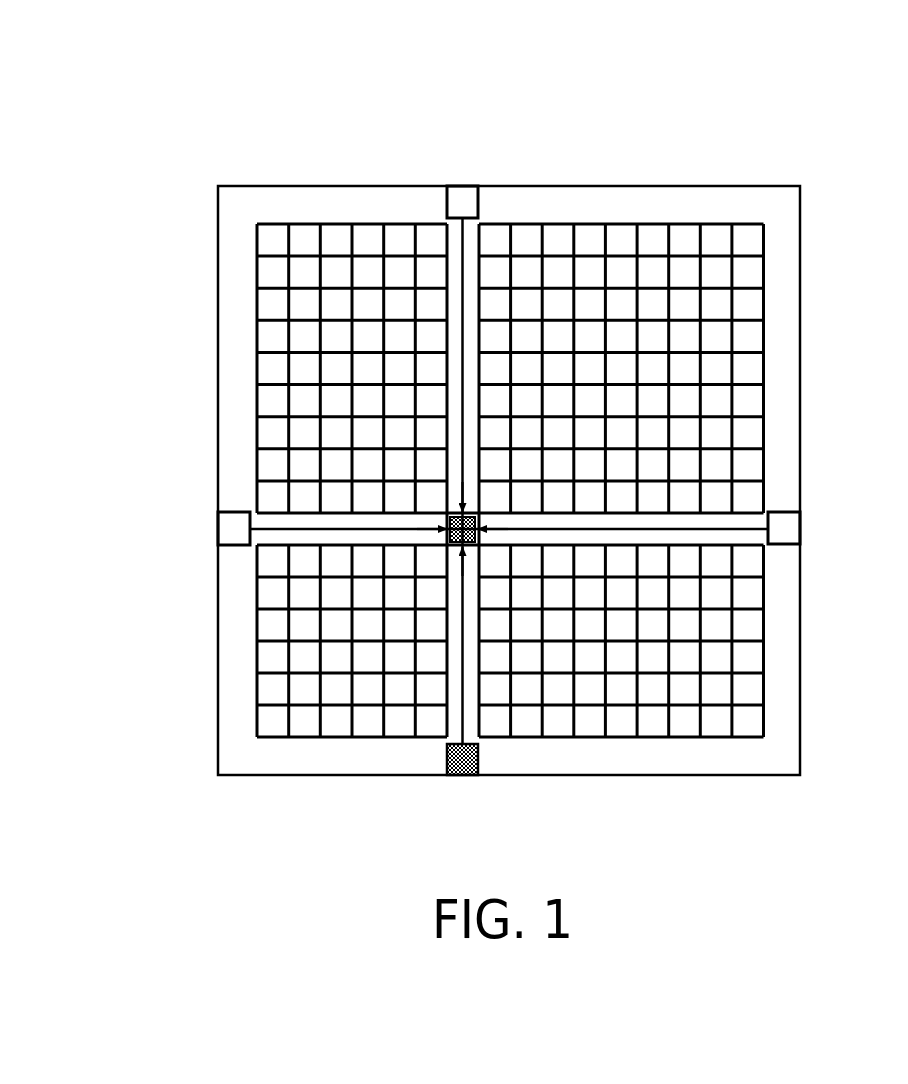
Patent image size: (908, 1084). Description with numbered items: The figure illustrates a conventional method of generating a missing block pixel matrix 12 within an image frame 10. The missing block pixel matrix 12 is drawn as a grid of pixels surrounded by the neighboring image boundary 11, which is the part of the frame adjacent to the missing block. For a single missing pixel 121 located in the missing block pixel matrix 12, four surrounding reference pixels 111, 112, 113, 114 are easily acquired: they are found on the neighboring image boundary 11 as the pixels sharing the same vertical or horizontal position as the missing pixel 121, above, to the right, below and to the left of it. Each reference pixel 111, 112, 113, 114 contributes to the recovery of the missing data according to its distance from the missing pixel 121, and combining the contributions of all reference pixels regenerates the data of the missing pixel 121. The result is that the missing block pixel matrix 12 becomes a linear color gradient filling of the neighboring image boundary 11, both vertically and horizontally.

The image frame 10 is at (812, 96).
The neighboring image boundary 11 is at (257, 217).
The missing block pixel matrix 12 is at (764, 240).
The reference pixel 111 is at (462, 201).
The reference pixel 112 is at (788, 529).
The reference pixel 113 is at (462, 778).
The reference pixel 114 is at (232, 528).
The missing pixel 121 is at (447, 512).